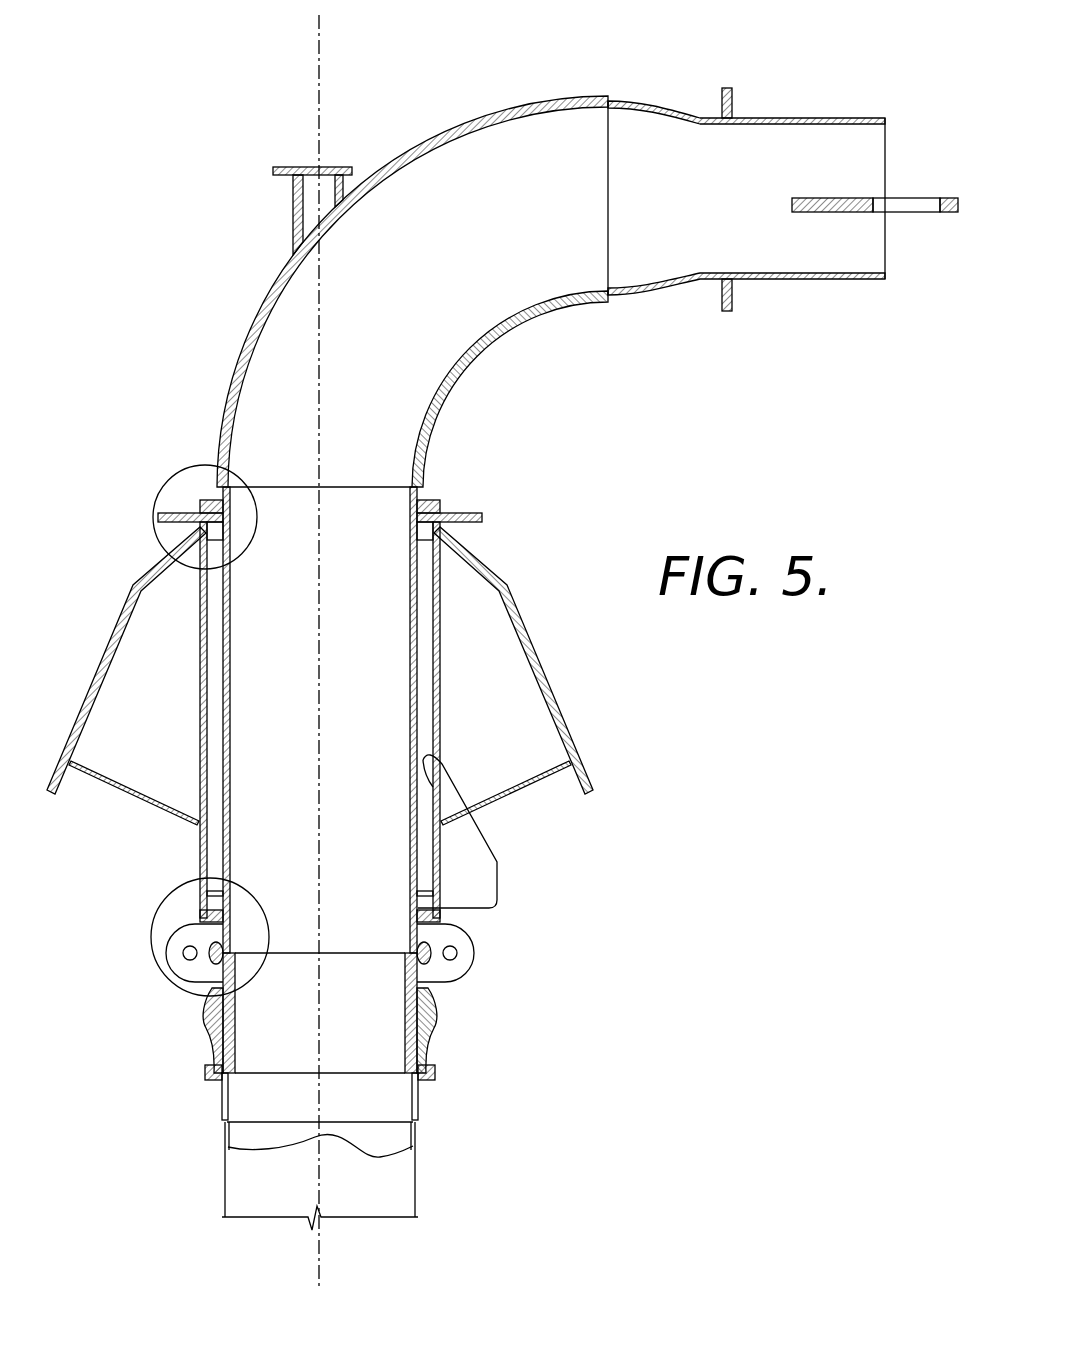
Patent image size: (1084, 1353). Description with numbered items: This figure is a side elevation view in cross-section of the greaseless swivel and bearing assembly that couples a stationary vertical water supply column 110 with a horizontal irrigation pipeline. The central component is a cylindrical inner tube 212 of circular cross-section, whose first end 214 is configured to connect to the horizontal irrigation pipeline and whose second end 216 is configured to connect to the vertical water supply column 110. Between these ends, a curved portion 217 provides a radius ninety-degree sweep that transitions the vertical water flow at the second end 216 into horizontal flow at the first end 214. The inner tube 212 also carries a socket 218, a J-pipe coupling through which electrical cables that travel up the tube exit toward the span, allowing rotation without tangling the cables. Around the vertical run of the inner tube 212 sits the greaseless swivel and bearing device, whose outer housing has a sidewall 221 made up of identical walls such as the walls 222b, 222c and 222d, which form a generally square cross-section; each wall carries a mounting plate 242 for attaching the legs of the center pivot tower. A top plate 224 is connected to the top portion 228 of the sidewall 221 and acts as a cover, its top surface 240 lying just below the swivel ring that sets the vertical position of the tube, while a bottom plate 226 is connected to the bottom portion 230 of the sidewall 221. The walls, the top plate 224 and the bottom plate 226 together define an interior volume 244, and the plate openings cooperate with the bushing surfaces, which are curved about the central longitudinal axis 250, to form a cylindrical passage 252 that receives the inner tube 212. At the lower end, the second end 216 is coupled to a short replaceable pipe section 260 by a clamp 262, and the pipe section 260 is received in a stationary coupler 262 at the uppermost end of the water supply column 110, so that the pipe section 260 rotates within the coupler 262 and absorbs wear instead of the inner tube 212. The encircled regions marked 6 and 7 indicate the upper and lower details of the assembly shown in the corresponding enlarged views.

The vertical water supply column 110 is at (398, 1196).
The inner tube 212 is at (200, 850).
The first end 214 is at (843, 280).
The second end 216 is at (457, 953).
The curved portion 217 is at (476, 366).
The socket 218 is at (292, 208).
The sidewall 221 is at (440, 722).
The wall 222b is at (440, 683).
The wall 222c is at (508, 787).
The wall 222d is at (200, 727).
The top plate 224 is at (200, 518).
The bottom plate 226 is at (165, 955).
The top portion 228 is at (197, 536).
The bottom portion 230 is at (198, 912).
The top surface 240 is at (462, 510).
The mounting plate 242 is at (97, 668).
The interior volume 244 is at (212, 676).
The longitudinal axis 250 is at (319, 58).
The cylindrical passage 252 is at (420, 620).
The pipe section 260 is at (420, 1048).
The clamp 262 is at (208, 1040).
The detail circle 6 is at (167, 480).
The detail circle 7 is at (157, 912).